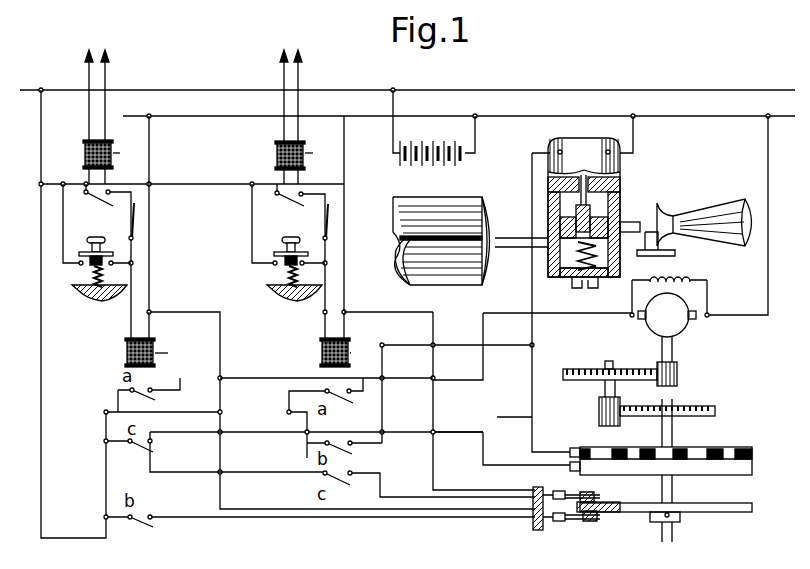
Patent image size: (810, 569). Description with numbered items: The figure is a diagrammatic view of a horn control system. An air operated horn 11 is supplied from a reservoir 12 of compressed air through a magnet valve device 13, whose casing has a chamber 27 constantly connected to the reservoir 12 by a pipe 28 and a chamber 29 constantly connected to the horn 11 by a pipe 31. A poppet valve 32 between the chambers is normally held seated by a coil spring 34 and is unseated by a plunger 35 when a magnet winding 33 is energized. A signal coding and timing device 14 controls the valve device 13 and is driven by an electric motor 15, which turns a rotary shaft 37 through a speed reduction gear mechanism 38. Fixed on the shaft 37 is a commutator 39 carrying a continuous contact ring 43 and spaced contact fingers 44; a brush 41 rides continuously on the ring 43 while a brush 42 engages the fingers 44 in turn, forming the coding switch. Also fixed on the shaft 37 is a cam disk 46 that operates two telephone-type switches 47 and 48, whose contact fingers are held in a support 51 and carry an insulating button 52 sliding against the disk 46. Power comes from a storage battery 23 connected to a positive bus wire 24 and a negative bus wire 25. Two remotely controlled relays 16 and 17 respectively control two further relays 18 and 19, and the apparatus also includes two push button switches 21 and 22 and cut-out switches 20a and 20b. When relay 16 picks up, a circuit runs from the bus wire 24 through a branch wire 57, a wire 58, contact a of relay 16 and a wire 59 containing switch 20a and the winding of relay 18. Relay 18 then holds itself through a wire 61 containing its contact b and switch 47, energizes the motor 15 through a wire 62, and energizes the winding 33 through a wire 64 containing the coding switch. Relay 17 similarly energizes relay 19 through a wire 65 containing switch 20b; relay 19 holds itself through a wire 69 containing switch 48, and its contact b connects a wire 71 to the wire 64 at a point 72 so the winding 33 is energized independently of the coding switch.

The air operated horn 11 is at (731, 203).
The reservoir 12 is at (474, 284).
The magnet valve device 13 is at (578, 217).
The signal coding and timing device 14 is at (580, 411).
The electric motor 15 is at (651, 328).
The remotely controlled relay 16 is at (83, 153).
The remotely controlled relay 17 is at (275, 153).
The relay 18 is at (125, 353).
The relay 19 is at (320, 353).
The cut-out switch 20a is at (134, 222).
The cut-out switch 20b is at (330, 222).
The push button switch 21 is at (84, 218).
The push button switch 22 is at (291, 234).
The storage battery 23 is at (452, 103).
The positive bus wire 24 is at (343, 90).
The negative bus wire 25 is at (490, 117).
The chamber 27 is at (562, 272).
The pipe 28 is at (522, 237).
The chamber 29 is at (570, 210).
The pipe 31 is at (632, 221).
The valve 32 is at (606, 262).
The magnet winding 33 is at (607, 163).
The coil spring 34 is at (583, 281).
The plunger 35 is at (548, 183).
The rotary shaft 37 is at (662, 432).
The speed reduction gear mechanism 38 is at (681, 381).
The commutator 39 is at (686, 465).
The brush 41 is at (565, 495).
The brush 42 is at (572, 450).
The contact ring 43 is at (692, 468).
The contact fingers 44 is at (740, 453).
The cam disk 46 is at (712, 506).
The switch 47 is at (572, 523).
The switch 48 is at (575, 494).
The support 51 is at (533, 490).
The insulating button 52 is at (592, 512).
The branch wire 57 is at (41, 127).
The wire 58 is at (198, 182).
The wire 59 is at (132, 282).
The wire 61 is at (193, 311).
The wire 62 is at (768, 158).
The wire 64 is at (632, 128).
The wire 65 is at (327, 302).
The wire 69 is at (432, 408).
The wire 71 is at (418, 344).
The point 72 is at (546, 335).